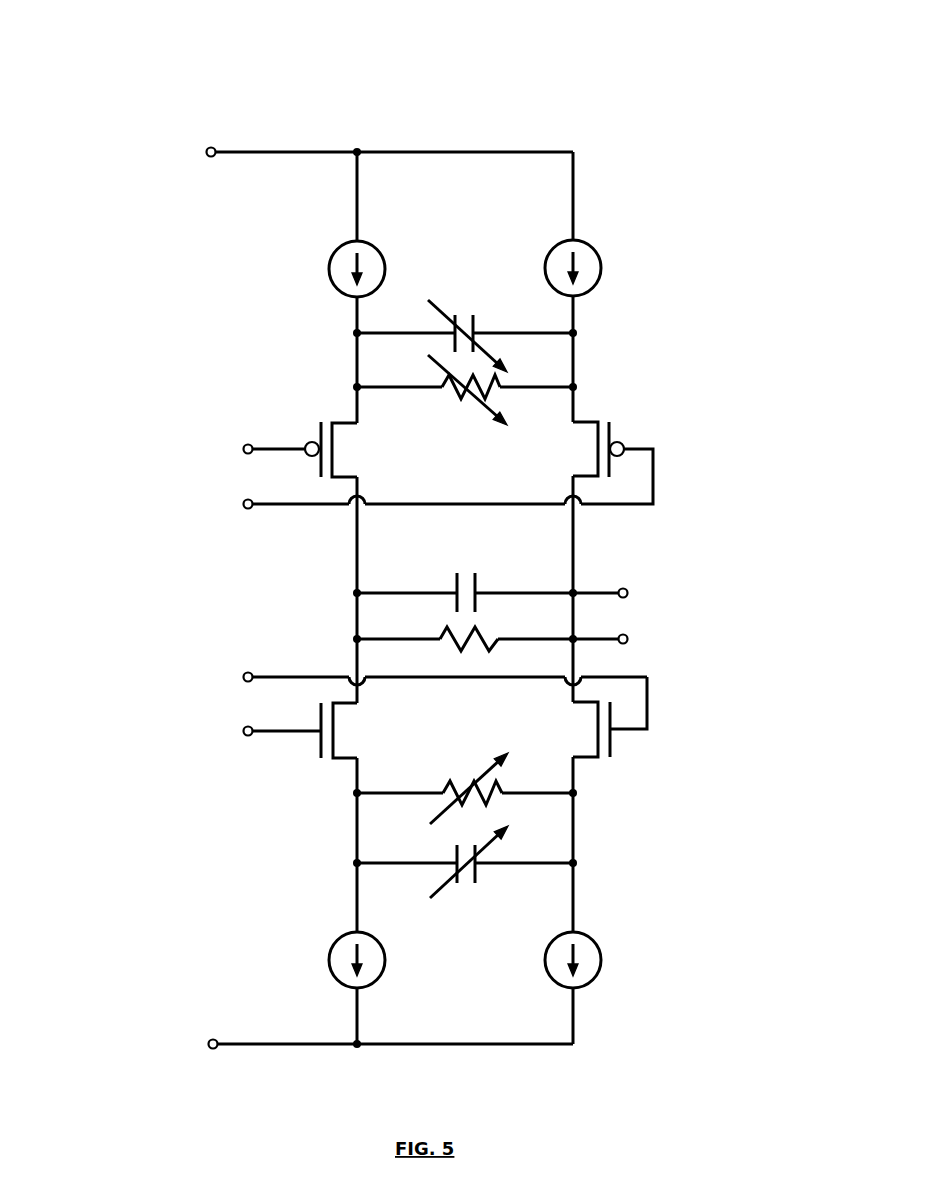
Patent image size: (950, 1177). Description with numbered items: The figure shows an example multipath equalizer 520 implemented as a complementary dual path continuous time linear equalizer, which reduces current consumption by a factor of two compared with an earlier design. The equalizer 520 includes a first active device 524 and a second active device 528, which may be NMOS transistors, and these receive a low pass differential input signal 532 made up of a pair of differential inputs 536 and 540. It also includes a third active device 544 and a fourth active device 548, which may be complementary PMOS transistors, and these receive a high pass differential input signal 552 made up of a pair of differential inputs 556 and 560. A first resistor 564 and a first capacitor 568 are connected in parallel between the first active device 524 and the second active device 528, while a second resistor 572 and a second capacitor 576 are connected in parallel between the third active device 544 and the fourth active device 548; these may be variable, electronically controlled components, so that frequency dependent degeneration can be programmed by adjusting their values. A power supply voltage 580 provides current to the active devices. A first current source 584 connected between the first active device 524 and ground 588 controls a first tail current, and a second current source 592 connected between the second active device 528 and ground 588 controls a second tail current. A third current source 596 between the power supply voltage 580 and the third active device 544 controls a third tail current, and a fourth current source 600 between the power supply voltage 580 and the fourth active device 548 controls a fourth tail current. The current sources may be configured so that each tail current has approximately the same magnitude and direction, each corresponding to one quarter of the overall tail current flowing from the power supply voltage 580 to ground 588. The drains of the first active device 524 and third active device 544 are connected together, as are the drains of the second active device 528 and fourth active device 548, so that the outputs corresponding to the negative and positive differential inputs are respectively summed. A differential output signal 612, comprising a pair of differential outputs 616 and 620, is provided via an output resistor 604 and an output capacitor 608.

The multipath equalizer 520 is at (96, 82).
The first active device 524 is at (320, 749).
The second active device 528 is at (612, 752).
The low pass differential input signal 532 is at (224, 712).
The differential input 536 is at (248, 677).
The differential input 540 is at (247, 731).
The third active device 544 is at (319, 430).
The fourth active device 548 is at (612, 428).
The high pass differential input signal 552 is at (224, 477).
The differential input 556 is at (246, 449).
The differential input 560 is at (247, 504).
The first resistor 564 is at (447, 786).
The first capacitor 568 is at (477, 881).
The second resistor 572 is at (452, 397).
The second capacitor 576 is at (477, 318).
The power supply voltage 580 is at (211, 152).
The first current source 584 is at (386, 960).
The ground 588 is at (210, 1044).
The second current source 592 is at (546, 960).
The third current source 596 is at (335, 284).
The fourth current source 600 is at (550, 258).
The output resistor 604 is at (495, 637).
The output capacitor 608 is at (477, 580).
The differential output signal 612 is at (640, 610).
The differential output 616 is at (626, 592).
The differential output 620 is at (627, 639).